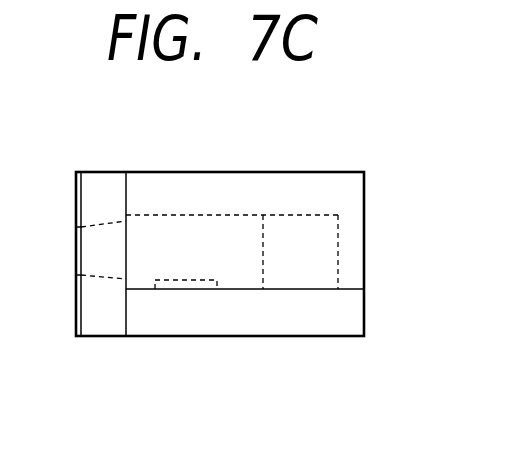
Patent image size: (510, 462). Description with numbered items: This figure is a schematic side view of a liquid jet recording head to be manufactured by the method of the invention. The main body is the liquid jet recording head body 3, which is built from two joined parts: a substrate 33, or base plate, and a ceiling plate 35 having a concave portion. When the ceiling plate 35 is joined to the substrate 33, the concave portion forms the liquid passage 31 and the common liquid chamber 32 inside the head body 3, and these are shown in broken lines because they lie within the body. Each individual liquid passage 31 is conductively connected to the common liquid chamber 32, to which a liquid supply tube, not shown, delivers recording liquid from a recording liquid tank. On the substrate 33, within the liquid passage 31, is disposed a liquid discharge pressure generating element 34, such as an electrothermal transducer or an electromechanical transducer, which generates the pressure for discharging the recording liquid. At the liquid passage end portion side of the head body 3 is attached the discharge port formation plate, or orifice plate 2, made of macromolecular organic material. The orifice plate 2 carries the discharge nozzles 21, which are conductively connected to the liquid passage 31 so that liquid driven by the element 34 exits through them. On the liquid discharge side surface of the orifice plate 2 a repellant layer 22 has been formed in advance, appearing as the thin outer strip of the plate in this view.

The liquid jet recording head body 3 is at (339, 173).
The discharge port formation plate 2 is at (104, 182).
The repellant layer 22 is at (75, 333).
The discharge nozzles 21 is at (98, 265).
The ceiling plate 35 is at (176, 182).
The liquid passage 31 is at (227, 232).
The common liquid chamber 32 is at (295, 232).
The substrate 33 is at (318, 320).
The liquid discharge pressure generating element 34 is at (184, 285).